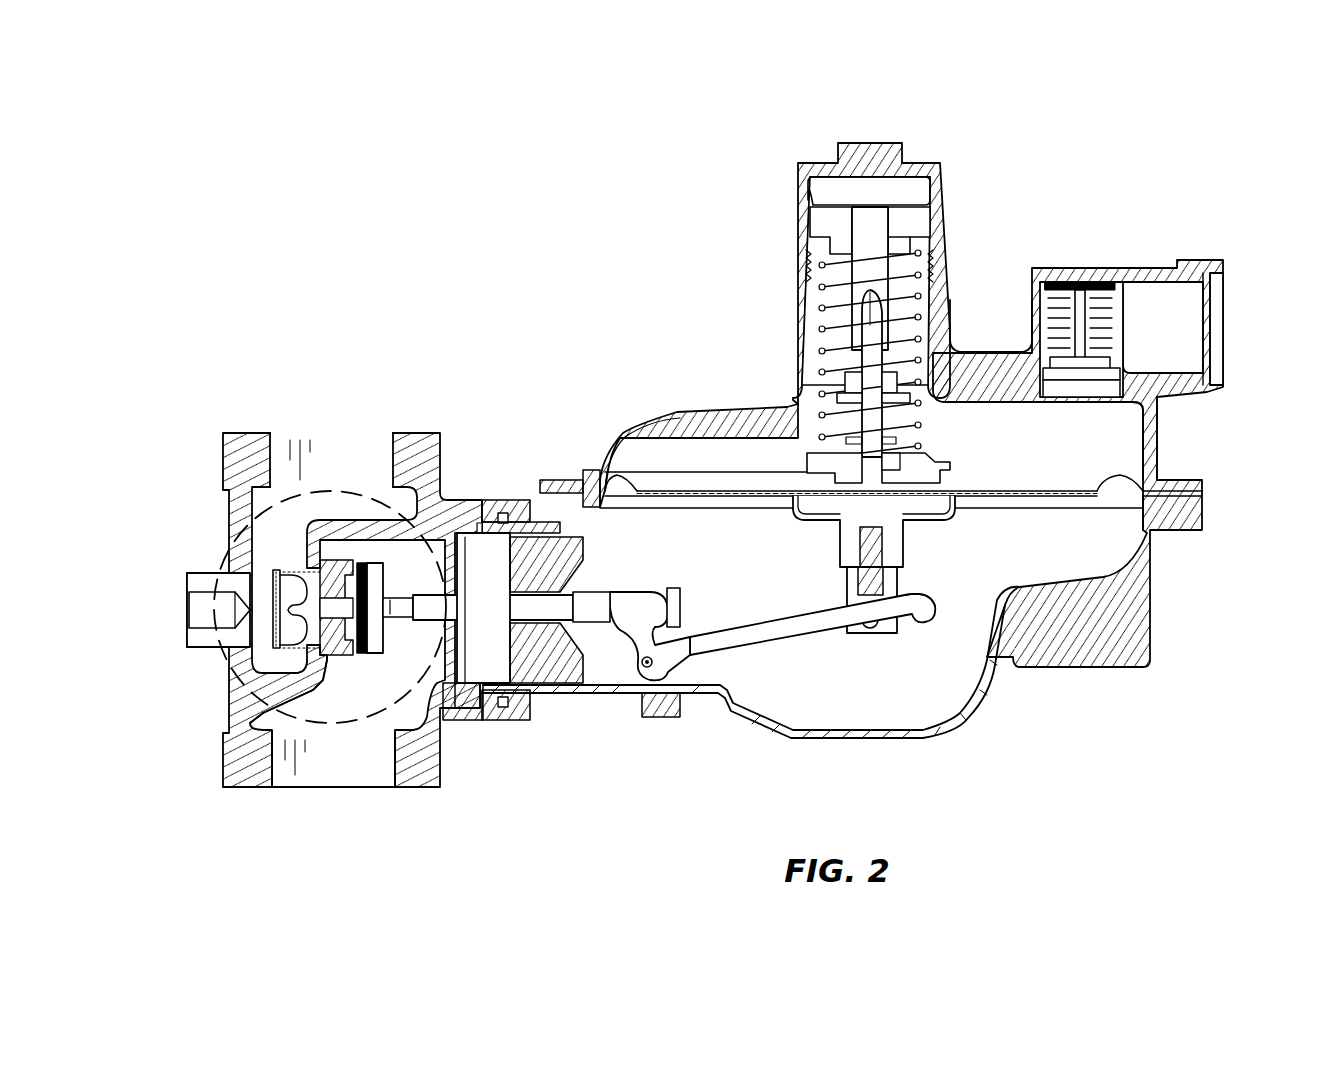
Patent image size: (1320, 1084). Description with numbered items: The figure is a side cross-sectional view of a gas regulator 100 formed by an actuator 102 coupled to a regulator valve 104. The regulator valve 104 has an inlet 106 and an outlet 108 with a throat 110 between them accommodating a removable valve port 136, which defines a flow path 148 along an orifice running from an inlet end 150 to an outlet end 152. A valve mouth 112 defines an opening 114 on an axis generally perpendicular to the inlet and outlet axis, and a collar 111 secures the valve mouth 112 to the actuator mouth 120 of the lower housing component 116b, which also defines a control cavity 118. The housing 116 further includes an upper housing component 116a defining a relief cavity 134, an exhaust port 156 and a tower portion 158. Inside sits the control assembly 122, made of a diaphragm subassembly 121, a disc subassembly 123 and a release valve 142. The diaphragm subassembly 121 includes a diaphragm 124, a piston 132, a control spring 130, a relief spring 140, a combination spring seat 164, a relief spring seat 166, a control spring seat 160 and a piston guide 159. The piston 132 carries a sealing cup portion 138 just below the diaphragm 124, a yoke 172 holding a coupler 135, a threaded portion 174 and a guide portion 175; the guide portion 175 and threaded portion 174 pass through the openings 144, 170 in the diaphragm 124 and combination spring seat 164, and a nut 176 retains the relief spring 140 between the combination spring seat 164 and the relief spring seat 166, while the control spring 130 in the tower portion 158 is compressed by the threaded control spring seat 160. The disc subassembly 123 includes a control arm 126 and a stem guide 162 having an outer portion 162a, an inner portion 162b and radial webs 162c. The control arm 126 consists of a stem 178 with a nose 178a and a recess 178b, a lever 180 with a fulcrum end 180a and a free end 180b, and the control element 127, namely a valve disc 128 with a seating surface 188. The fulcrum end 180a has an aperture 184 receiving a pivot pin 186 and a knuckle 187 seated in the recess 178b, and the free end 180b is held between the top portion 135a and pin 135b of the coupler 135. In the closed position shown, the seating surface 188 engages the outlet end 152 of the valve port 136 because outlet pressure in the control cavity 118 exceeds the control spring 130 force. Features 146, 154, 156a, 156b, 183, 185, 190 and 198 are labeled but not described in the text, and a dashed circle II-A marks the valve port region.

The gas regulator 100 is at (972, 140).
The actuator 102 is at (945, 215).
The regulator valve 104 is at (447, 425).
The inlet 106 is at (276, 455).
The outlet 108 is at (276, 790).
The throat 110 is at (292, 652).
The collar 111 is at (498, 510).
The valve mouth 112 is at (470, 692).
The opening 114 is at (467, 710).
The housing 116 is at (1155, 630).
The upper housing component 116a is at (1152, 450).
The lower housing component 116b is at (1145, 584).
The control cavity 118 is at (965, 668).
The actuator mouth 120 is at (608, 718).
The diaphragm subassembly 121 is at (740, 512).
The control assembly 122 is at (937, 536).
The disc subassembly 123 is at (485, 690).
The diaphragm 124 is at (1132, 490).
The control arm 126 is at (656, 590).
The control element 127 is at (362, 658).
The valve disc 128 is at (372, 562).
The control spring 130 is at (822, 302).
The piston 132 is at (860, 420).
The relief cavity 134 is at (1130, 415).
The coupler 135 is at (926, 612).
The top portion 135a is at (855, 590).
The pin 135b is at (870, 630).
The valve port 136 is at (268, 586).
The sealing cup portion 138 is at (803, 520).
The relief spring 140 is at (888, 410).
The release valve 142 is at (1110, 300).
The opening 144 is at (886, 432).
The relief valve seat 146 is at (1205, 392).
The flow path 148 is at (218, 648).
The inlet end 150 is at (272, 588).
The outlet end 152 is at (340, 558).
The relief spring 154 is at (1112, 330).
The exhaust port 156 is at (1196, 292).
The relief outlet wall 156a is at (1030, 332).
The relief outlet bore 156b is at (1212, 310).
The tower portion 158 is at (816, 235).
The piston guide 159 is at (848, 215).
The control spring seat 160 is at (912, 248).
The stem guide 162 is at (555, 672).
The outer portion 162a is at (540, 480).
The inner portion 162b is at (558, 700).
The radial webs 162c is at (583, 478).
The combination spring seat 164 is at (812, 460).
The relief spring seat 166 is at (888, 372).
The opening 170 is at (762, 405).
The yoke 172 is at (905, 545).
The threaded portion 174 is at (853, 380).
The guide portion 175 is at (882, 330).
The nut 176 is at (855, 398).
The stem 178 is at (478, 518).
The nose 178a is at (405, 600).
The recess 178b is at (613, 591).
The lever 180 is at (806, 636).
The fulcrum end 180a is at (692, 678).
The free end 180b is at (922, 624).
The disc backing plate 183 is at (364, 562).
The aperture 184 is at (645, 668).
The valve rod 185 is at (378, 626).
The pivot pin 186 is at (641, 660).
The knuckle 187 is at (674, 603).
The seating surface 188 is at (360, 670).
The hub recess 190 is at (372, 655).
The relief valve plate 198 is at (1140, 368).
The detail view circle II-A is at (228, 498).